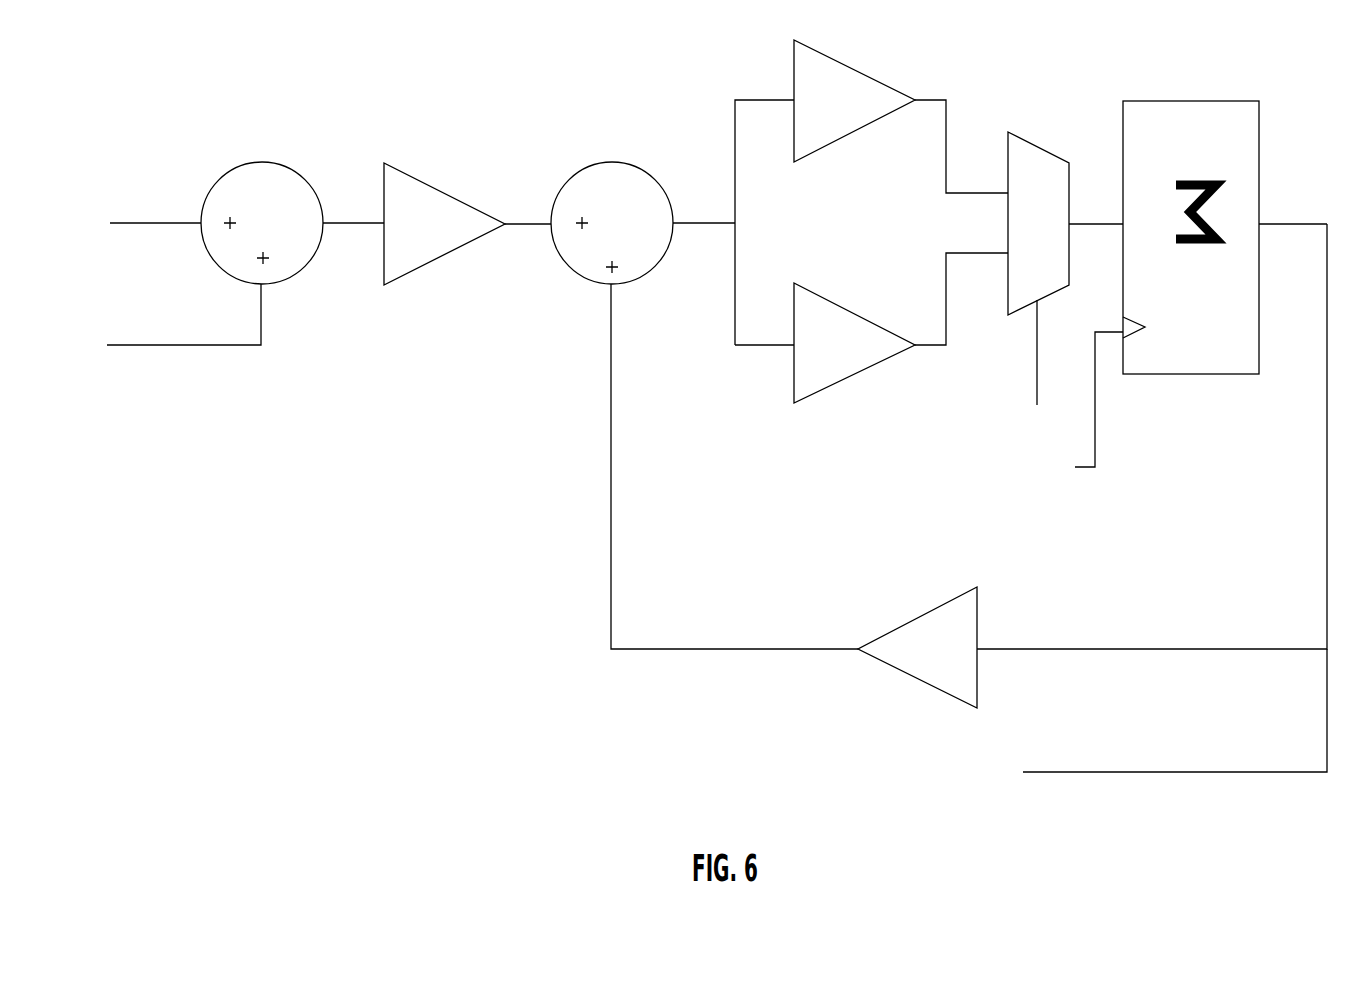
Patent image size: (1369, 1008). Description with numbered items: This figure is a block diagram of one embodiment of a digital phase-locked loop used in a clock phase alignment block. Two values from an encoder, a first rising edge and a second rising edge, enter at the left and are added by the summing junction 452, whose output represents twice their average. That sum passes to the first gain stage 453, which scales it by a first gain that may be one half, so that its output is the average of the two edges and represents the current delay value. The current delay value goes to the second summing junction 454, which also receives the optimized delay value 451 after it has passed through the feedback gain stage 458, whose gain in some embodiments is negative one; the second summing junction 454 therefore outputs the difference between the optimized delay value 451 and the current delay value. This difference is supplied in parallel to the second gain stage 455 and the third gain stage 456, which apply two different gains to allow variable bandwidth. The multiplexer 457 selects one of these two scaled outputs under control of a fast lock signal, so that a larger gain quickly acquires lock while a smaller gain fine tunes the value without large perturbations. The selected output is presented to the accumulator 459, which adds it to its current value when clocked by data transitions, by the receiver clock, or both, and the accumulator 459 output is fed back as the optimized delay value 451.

The optimized delay value 451 is at (1110, 771).
The summing junction 452 is at (261, 239).
The first gain stage 453 is at (428, 239).
The second summing junction 454 is at (609, 239).
The second gain stage 455 is at (836, 116).
The third gain stage 456 is at (836, 360).
The multiplexer 457 is at (1020, 239).
The feedback gain stage 458 is at (926, 665).
The accumulator 459 is at (1178, 299).